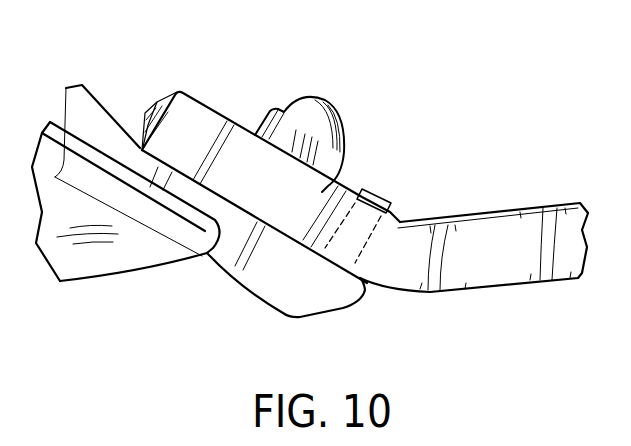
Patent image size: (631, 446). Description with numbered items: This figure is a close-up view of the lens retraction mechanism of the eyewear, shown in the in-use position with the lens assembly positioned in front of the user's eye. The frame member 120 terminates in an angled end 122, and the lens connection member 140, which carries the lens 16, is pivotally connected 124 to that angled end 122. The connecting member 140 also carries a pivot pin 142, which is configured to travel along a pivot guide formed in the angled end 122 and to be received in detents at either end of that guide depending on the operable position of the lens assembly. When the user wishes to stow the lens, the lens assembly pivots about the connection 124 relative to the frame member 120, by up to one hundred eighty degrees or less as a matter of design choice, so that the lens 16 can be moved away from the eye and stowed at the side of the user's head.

The lens 16 is at (97, 268).
The frame member 120 is at (522, 260).
The angled end 122 is at (192, 142).
The pivotal connection 124 is at (318, 113).
The lens connection member 140 is at (282, 275).
The pivot pin 142 is at (385, 196).